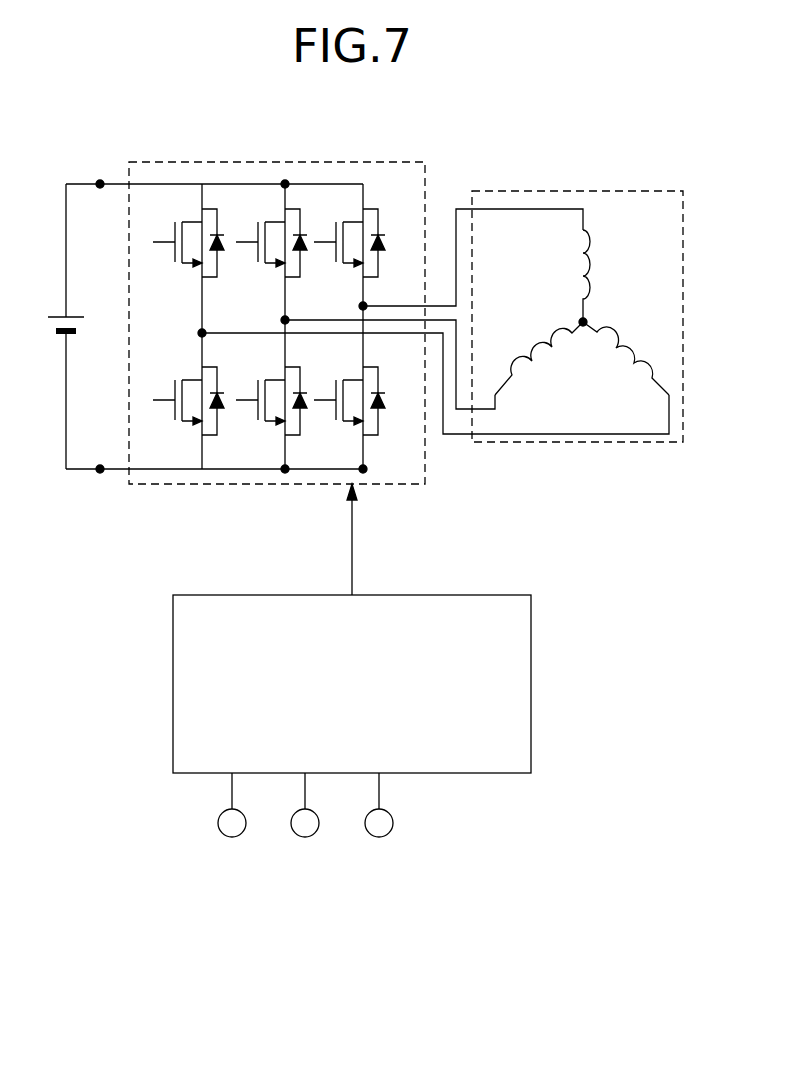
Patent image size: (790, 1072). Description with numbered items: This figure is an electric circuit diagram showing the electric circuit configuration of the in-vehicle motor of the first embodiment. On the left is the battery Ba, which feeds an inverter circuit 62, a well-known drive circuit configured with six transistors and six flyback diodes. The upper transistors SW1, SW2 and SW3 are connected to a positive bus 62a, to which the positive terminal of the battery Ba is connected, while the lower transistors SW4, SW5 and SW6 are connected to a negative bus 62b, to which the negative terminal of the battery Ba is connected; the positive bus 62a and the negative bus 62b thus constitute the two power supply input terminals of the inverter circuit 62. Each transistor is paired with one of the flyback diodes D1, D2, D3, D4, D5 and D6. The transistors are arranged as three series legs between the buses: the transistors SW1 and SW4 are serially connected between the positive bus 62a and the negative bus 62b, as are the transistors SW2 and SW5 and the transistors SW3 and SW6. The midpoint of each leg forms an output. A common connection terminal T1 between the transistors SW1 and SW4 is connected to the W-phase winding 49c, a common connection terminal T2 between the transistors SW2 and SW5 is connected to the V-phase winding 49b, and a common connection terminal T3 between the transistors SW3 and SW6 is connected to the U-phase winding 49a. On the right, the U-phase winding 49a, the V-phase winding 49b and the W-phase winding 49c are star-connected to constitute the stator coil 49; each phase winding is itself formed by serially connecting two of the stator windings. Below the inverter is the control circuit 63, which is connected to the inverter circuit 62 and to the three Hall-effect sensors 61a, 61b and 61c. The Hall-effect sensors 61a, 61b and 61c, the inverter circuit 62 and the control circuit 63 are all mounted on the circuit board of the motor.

The battery Ba is at (58, 336).
The inverter circuit 62 is at (266, 162).
The positive bus 62a is at (343, 182).
The negative bus 62b is at (247, 484).
The transistor SW1 is at (178, 266).
The transistor SW2 is at (263, 266).
The transistor SW3 is at (345, 266).
The transistor SW4 is at (178, 424).
The transistor SW5 is at (263, 424).
The transistor SW6 is at (345, 424).
The flyback diode D1 is at (221, 237).
The flyback diode D2 is at (302, 237).
The flyback diode D3 is at (381, 237).
The flyback diode D4 is at (220, 395).
The flyback diode D5 is at (303, 395).
The flyback diode D6 is at (381, 395).
The common connection terminal T1 is at (202, 333).
The common connection terminal T2 is at (285, 320).
The common connection terminal T3 is at (363, 306).
The stator coil 49 is at (658, 191).
The U-phase winding 49a is at (583, 262).
The V-phase winding 49b is at (537, 357).
The W-phase winding 49c is at (624, 357).
The control circuit 63 is at (531, 683).
The Hall-effect sensor 61a is at (232, 837).
The Hall-effect sensor 61b is at (305, 837).
The Hall-effect sensor 61c is at (379, 837).